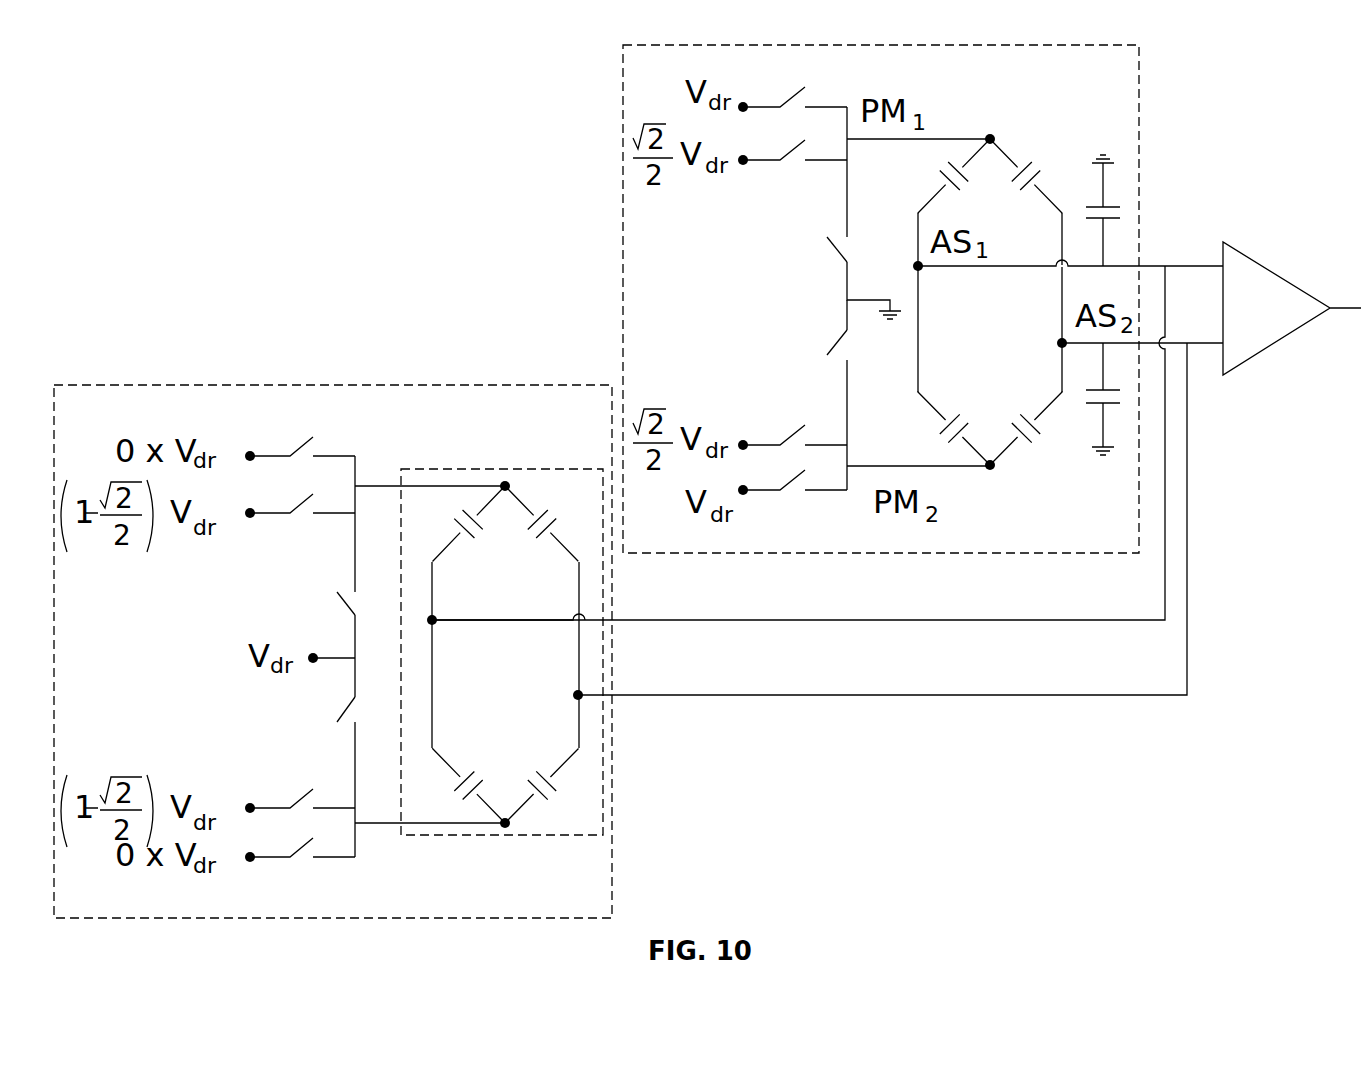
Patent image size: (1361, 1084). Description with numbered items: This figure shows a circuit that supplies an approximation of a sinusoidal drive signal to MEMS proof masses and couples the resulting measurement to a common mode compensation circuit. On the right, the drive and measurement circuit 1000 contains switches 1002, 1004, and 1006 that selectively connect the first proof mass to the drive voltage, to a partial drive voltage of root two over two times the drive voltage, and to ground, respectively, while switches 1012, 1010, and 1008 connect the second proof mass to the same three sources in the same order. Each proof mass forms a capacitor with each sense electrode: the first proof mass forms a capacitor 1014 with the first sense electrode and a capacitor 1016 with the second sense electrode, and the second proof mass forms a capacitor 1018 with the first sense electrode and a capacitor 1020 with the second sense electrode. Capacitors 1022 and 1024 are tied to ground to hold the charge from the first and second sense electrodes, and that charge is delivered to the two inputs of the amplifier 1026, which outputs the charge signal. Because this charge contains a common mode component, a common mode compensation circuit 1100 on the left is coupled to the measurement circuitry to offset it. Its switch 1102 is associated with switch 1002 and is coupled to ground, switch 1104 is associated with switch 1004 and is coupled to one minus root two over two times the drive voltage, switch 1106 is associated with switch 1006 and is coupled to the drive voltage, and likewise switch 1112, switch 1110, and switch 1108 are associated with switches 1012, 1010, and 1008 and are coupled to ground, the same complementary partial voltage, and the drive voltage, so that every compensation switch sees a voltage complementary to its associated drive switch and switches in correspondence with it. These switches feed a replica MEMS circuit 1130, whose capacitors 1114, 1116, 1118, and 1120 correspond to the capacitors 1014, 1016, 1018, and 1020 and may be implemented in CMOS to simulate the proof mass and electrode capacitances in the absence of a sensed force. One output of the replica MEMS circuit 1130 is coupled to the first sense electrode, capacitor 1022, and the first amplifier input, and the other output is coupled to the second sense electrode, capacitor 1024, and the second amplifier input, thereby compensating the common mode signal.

The drive and measurement circuit 1000 is at (928, 554).
The switch 1002 is at (795, 82).
The switch 1004 is at (797, 145).
The switch 1006 is at (825, 253).
The switch 1008 is at (825, 355).
The switch 1010 is at (797, 428).
The switch 1012 is at (797, 485).
The capacitor 1014 is at (970, 188).
The capacitor 1016 is at (1010, 188).
The capacitor 1018 is at (963, 415).
The capacitor 1020 is at (1015, 413).
The capacitor 1022 is at (1125, 212).
The capacitor 1024 is at (1125, 397).
The amplifier 1026 is at (1275, 268).
The common mode compensation circuit 1100 is at (420, 384).
The switch 1102 is at (298, 442).
The switch 1104 is at (298, 498).
The switch 1106 is at (333, 603).
The switch 1108 is at (328, 720).
The switch 1110 is at (298, 800).
The switch 1112 is at (298, 848).
The capacitor 1114 is at (482, 538).
The capacitor 1116 is at (532, 538).
The capacitor 1118 is at (478, 775).
The capacitor 1120 is at (533, 773).
The replica MEMS circuit 1130 is at (525, 836).